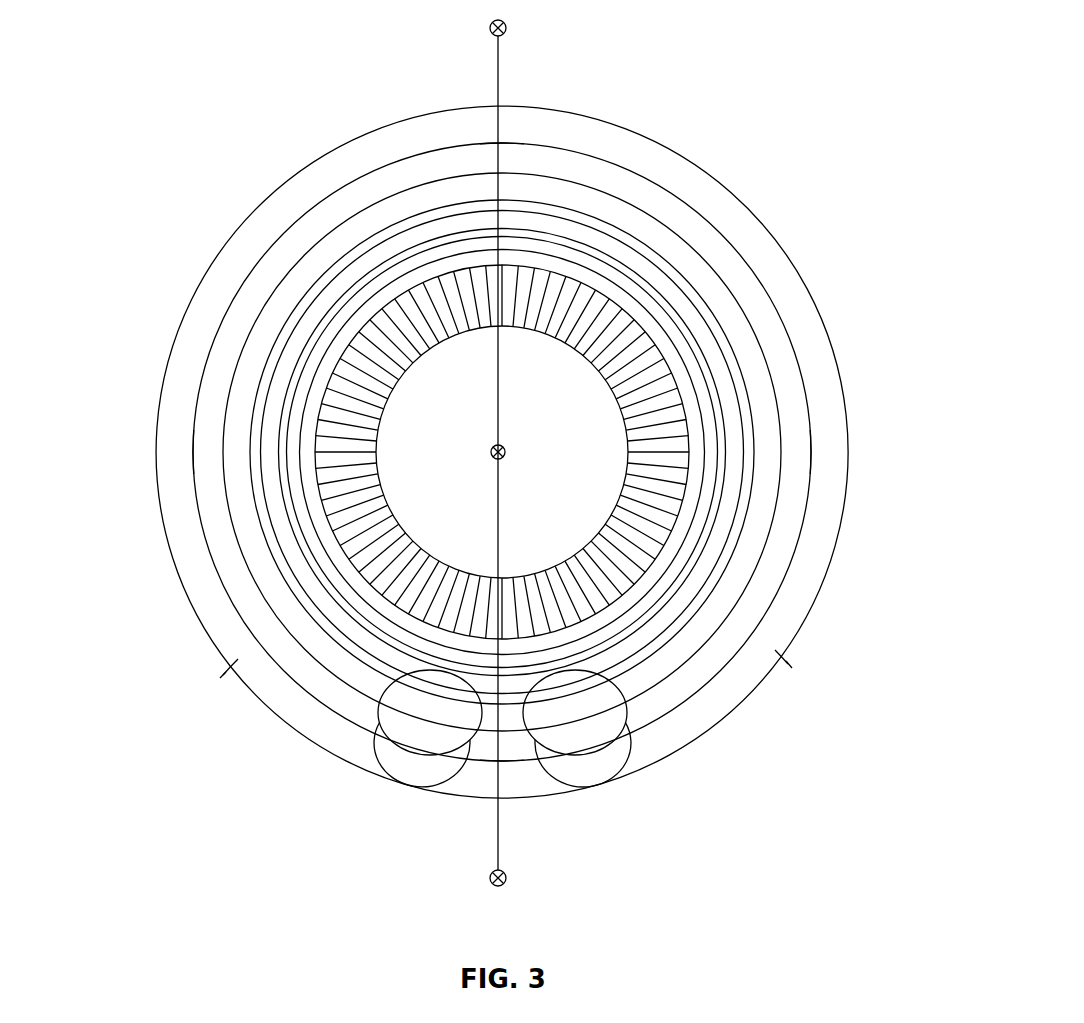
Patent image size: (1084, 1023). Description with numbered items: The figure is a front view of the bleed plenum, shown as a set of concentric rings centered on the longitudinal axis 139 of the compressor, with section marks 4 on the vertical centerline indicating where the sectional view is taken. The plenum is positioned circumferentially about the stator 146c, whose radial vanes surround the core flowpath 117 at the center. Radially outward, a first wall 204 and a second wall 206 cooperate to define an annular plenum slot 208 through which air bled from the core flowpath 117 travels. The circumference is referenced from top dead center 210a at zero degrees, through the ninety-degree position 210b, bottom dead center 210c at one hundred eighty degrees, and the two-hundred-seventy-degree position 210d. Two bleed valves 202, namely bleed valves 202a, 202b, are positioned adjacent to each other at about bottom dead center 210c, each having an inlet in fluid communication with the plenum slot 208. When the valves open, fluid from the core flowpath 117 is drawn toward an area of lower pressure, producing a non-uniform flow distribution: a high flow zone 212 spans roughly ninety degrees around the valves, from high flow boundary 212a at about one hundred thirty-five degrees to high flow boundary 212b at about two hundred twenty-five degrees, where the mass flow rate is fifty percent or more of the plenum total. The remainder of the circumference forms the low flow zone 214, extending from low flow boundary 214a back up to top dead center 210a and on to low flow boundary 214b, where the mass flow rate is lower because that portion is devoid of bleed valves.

The section line 4- 4 is at (510, 455).
The core flowpath 117 is at (597, 327).
The longitudinal axis 139 is at (493, 448).
The stator 146c is at (657, 346).
The bleed valves 202 is at (390, 737).
The bleed valve 202a is at (632, 765).
The bleed valve 202b is at (373, 765).
The first wall 204 is at (807, 504).
The second wall 206 is at (772, 380).
The plenum slot 208 is at (760, 560).
The top dead center 210a is at (501, 144).
The 90 degree position 210b is at (812, 450).
The bottom dead center 210c is at (497, 763).
The 270 degree position 210d is at (193, 450).
The high flow zone 212 is at (824, 752).
The high flow boundary 212a is at (738, 620).
The high flow boundary 212b is at (223, 675).
The low flow zone 214 is at (283, 119).
The low flow boundary 214a is at (273, 630).
The low flow boundary 214b is at (789, 664).